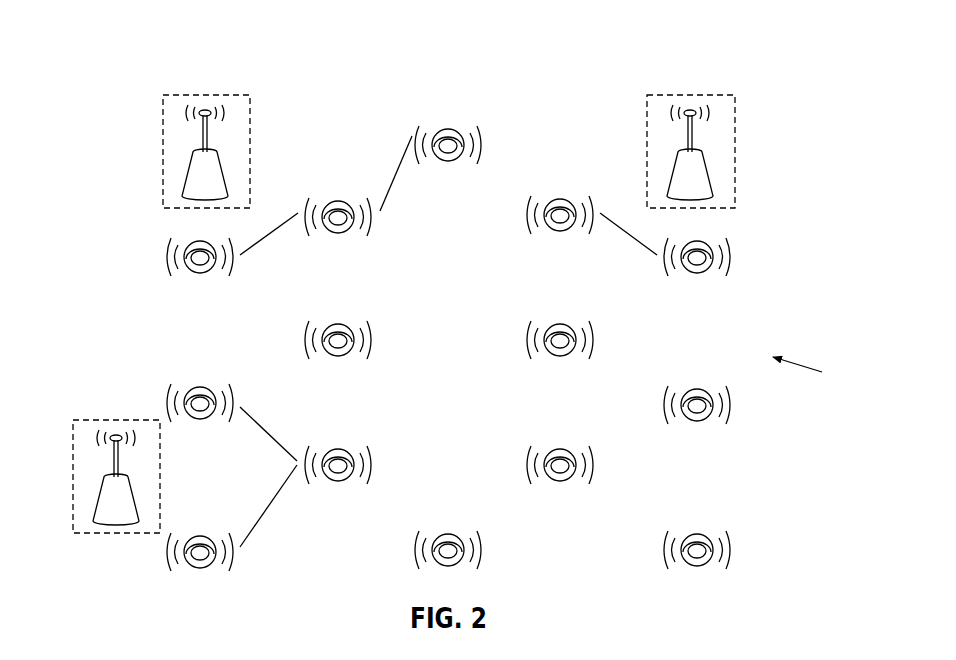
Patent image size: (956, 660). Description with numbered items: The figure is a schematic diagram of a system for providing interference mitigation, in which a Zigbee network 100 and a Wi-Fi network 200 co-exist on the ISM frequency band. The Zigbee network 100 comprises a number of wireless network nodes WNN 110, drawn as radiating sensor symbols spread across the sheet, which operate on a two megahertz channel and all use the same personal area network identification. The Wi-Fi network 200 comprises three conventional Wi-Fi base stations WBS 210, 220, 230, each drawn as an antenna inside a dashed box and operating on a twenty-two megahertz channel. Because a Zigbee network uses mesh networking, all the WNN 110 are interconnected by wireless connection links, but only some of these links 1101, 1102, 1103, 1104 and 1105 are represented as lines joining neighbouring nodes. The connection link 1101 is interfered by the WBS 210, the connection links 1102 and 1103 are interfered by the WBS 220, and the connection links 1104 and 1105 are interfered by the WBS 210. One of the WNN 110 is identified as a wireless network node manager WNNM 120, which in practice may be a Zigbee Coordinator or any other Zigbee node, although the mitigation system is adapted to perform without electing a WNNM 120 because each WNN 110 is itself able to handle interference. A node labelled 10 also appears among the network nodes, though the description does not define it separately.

The Zigbee network 100 is at (812, 370).
The sensor node 10 is at (198, 272).
The wireless network node 110 is at (336, 232).
The wireless connection link 1101 is at (628, 240).
The wireless connection link 1102 is at (391, 177).
The wireless connection link 1103 is at (272, 238).
The wireless connection link 1104 is at (268, 435).
The wireless connection link 1105 is at (270, 513).
The wireless network node manager 120 is at (560, 355).
The Wi-Fi network 200 is at (162, 114).
The Wi-Fi base station 210 is at (712, 175).
The Wi-Fi base station 220 is at (193, 178).
The Wi-Fi base station 230 is at (97, 500).